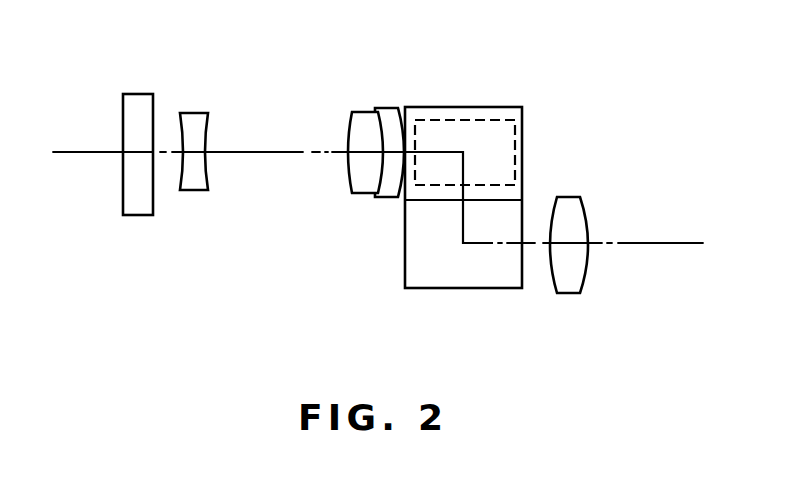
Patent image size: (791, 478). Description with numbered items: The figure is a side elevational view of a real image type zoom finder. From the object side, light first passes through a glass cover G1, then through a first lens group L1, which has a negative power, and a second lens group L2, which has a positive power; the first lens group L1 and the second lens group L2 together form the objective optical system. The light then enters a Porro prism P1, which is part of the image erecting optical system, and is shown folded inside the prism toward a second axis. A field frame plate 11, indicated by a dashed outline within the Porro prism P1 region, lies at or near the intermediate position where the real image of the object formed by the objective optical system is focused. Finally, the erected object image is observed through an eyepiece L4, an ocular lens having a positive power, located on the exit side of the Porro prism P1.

The glass cover G1 is at (137, 94).
The first lens group L1 is at (193, 113).
The second lens group L2 is at (400, 73).
The Porro prism P1 is at (460, 288).
The field frame plate 11 is at (528, 120).
The eyepiece L4 is at (575, 208).